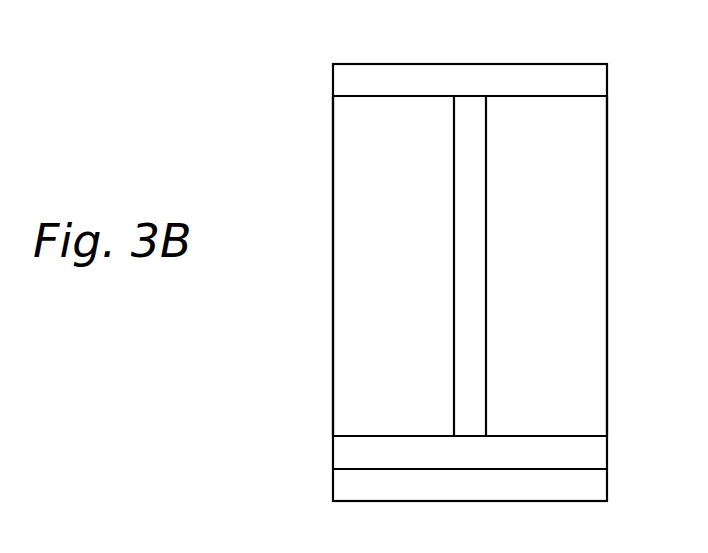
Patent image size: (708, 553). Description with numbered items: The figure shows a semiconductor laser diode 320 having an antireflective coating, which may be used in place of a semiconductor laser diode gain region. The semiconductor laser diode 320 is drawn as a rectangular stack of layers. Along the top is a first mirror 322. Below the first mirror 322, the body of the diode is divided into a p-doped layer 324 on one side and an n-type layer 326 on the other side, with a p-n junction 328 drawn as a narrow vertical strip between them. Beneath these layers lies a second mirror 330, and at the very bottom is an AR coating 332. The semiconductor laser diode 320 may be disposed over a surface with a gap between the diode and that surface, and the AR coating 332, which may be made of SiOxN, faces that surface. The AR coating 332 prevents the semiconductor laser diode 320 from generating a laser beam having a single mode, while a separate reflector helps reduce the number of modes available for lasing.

The semiconductor laser diode 320 is at (220, 61).
The first mirror 322 is at (468, 73).
The p-doped layer 324 is at (598, 351).
The n-type layer 326 is at (338, 350).
The p-n junction 328 is at (480, 351).
The second mirror 330 is at (598, 453).
The AR coating 332 is at (598, 488).